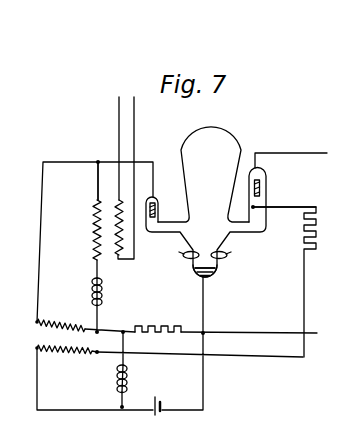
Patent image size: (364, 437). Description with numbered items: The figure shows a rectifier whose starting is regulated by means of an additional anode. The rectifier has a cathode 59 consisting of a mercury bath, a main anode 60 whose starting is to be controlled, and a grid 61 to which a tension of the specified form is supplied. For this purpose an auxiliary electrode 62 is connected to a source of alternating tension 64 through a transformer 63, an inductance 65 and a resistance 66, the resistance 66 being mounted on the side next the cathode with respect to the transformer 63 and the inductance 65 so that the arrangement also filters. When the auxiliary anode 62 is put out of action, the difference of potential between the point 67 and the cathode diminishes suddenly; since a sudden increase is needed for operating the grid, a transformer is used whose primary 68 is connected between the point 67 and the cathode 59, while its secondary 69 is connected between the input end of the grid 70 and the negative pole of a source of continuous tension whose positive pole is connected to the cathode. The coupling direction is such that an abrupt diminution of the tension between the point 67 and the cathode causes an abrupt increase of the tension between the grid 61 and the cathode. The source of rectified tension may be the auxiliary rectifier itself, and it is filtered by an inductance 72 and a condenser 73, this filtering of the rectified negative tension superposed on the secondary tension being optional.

The cathode 59 is at (200, 276).
The main anode 60 is at (262, 189).
The grid 61 is at (256, 210).
The auxiliary electrode 62 is at (153, 220).
The transformer 63 is at (105, 233).
The source of alternating tension 64 is at (134, 123).
The inductance 65 is at (103, 291).
The resistance 66 is at (148, 330).
The point 67 is at (103, 168).
The primary 68 is at (61, 317).
The secondary 69 is at (67, 359).
The input end of the grid 70 is at (315, 238).
The inductance 72 is at (132, 377).
The condenser 73 is at (156, 401).